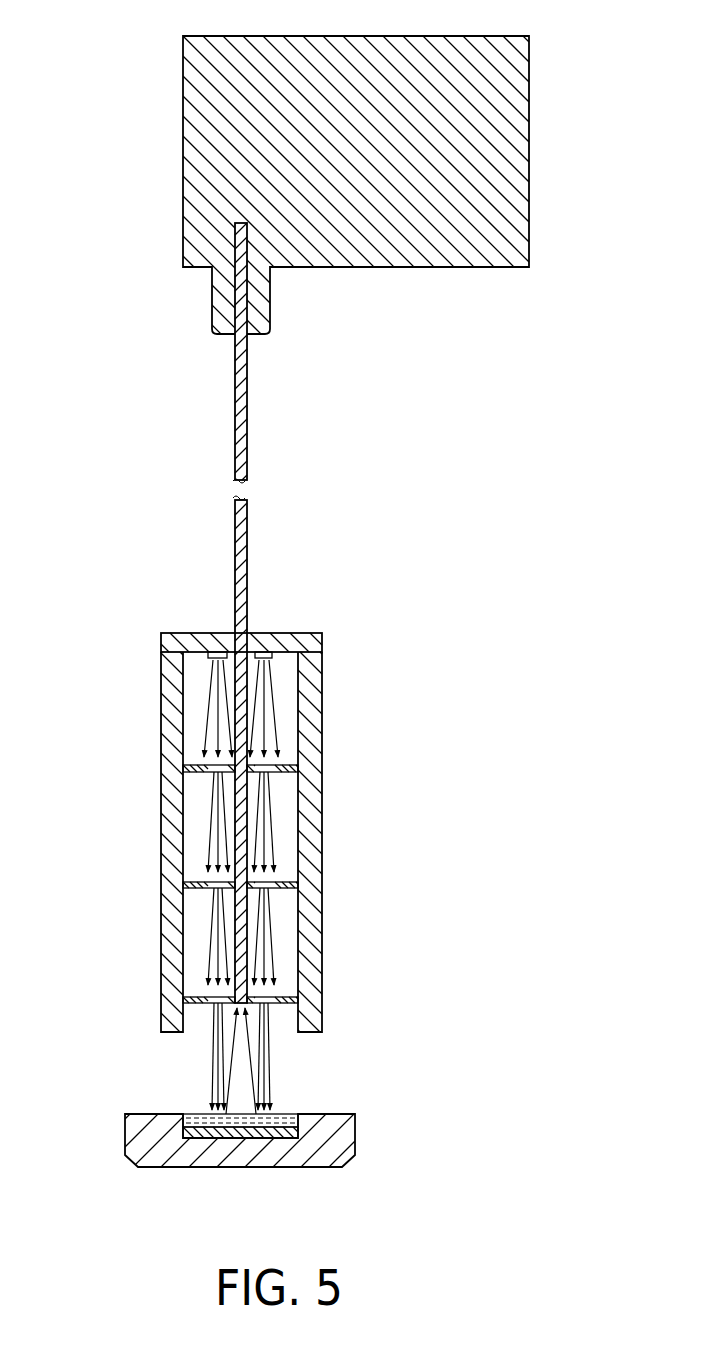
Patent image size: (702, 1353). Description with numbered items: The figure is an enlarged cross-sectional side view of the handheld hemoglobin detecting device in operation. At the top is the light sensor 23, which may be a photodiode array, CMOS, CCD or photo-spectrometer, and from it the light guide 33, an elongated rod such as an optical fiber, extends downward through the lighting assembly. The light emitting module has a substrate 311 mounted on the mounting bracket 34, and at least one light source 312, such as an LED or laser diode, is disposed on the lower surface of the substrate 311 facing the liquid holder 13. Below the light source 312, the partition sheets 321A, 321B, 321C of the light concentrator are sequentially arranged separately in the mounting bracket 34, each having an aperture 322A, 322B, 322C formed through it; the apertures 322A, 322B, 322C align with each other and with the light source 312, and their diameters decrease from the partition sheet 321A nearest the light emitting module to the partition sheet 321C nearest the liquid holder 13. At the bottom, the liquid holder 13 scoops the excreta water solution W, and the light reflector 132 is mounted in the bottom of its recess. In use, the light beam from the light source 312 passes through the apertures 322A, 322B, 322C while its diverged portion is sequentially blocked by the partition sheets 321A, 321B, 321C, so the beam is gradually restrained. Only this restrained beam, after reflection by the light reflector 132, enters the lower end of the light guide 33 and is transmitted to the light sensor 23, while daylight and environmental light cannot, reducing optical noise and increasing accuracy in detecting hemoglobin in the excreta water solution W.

The light sensor 23 is at (359, 37).
The light guide 33 is at (237, 447).
The substrate 311 is at (185, 640).
The light source 312 is at (273, 654).
The mounting bracket 34 is at (318, 708).
The partition sheet 321A is at (195, 768).
The aperture 322A is at (275, 772).
The partition sheet 321B is at (195, 882).
The aperture 322B is at (270, 888).
The partition sheet 321C is at (195, 997).
The aperture 322C is at (270, 1003).
The excreta water solution W is at (291, 1113).
The liquid holder 13 is at (157, 1161).
The light reflector 132 is at (250, 1135).